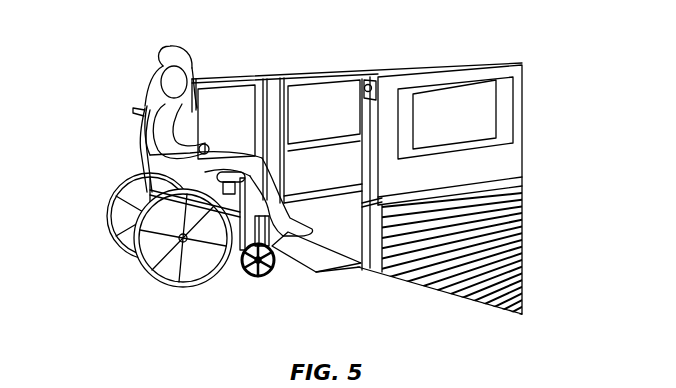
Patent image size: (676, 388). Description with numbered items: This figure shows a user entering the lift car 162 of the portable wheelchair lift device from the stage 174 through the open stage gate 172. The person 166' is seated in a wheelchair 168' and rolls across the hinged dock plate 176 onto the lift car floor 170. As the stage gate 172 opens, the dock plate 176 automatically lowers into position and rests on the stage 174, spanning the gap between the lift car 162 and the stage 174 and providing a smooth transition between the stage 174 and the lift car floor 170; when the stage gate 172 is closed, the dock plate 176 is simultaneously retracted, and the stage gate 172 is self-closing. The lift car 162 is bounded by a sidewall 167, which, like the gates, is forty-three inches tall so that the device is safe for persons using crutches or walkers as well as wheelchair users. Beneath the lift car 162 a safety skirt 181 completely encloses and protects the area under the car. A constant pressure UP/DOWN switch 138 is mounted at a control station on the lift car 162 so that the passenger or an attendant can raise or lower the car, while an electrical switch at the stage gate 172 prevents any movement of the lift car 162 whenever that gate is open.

The lift car 162 is at (488, 60).
The constant pressure UP/DOWN switch 138 is at (373, 78).
The sidewall 167 is at (512, 156).
The stage gate 172 is at (223, 79).
The safety skirt 181 is at (490, 250).
The stage 174 is at (450, 311).
The lift car floor 170 is at (357, 234).
The hinged dock plate 176 is at (302, 254).
The person 166' is at (195, 141).
The wheelchair 168' is at (181, 197).